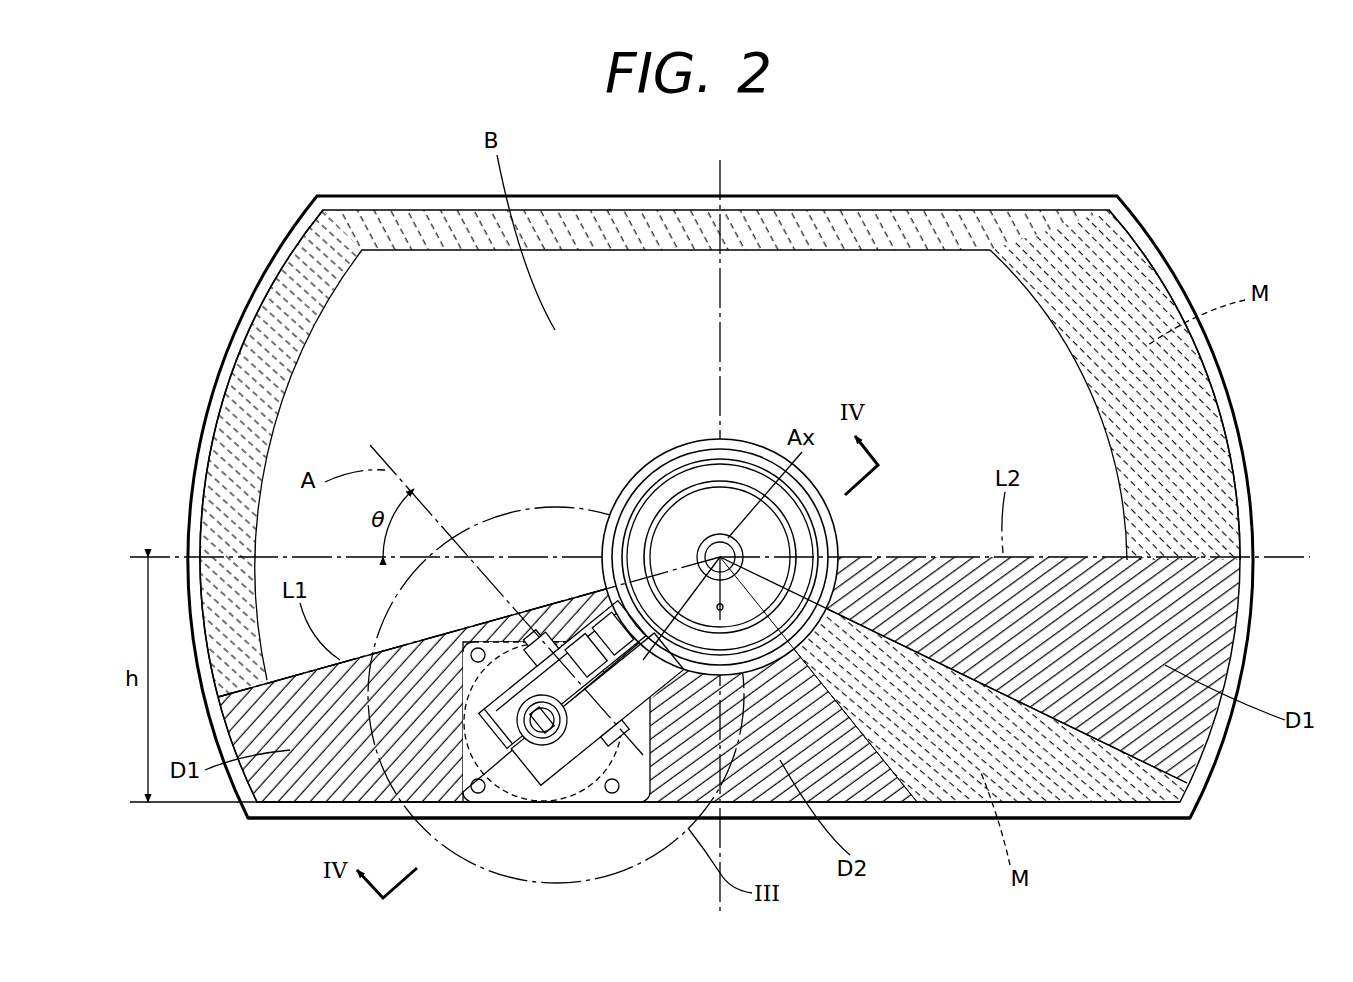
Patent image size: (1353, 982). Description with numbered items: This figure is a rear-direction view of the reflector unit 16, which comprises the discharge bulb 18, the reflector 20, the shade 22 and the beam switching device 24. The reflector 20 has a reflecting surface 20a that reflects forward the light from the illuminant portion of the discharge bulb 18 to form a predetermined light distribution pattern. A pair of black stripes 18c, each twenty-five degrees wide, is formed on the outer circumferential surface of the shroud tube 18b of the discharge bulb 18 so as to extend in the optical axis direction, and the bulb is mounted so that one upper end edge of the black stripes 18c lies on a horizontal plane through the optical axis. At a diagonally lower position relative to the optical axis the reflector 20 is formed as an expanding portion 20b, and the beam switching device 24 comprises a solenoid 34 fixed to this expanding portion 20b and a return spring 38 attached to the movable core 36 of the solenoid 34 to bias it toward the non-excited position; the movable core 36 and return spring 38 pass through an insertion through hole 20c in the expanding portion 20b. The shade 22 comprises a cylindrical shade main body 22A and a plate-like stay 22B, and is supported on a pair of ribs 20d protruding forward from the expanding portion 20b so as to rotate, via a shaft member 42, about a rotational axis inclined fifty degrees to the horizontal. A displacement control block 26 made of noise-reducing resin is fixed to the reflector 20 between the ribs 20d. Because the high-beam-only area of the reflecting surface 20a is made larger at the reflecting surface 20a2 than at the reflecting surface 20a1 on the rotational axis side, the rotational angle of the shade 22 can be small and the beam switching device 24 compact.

The reflector unit 16 is at (1197, 236).
The discharge bulb 18 is at (702, 581).
The shroud tube 18b is at (728, 537).
The black stripes 18c is at (700, 552).
The reflector 20 is at (741, 416).
The reflecting surface 20a is at (878, 295).
The reflecting surface on the side where the rotational axis is disposed 20a1 is at (277, 337).
The reflecting surface on one side of the optical axis 20a2 is at (1182, 440).
The expanding portion 20b is at (637, 820).
The insertion through hole 20c is at (490, 665).
The ribs 20d is at (487, 730).
The shade 22 is at (568, 616).
The shade main body 22A is at (562, 675).
The stay 22B is at (601, 714).
The beam switching device 24 is at (428, 727).
The displacement control block 26 is at (612, 633).
The solenoid 34 is at (613, 790).
The movable core 36 is at (542, 720).
The return spring 38 is at (539, 646).
The shaft member 42 is at (586, 656).